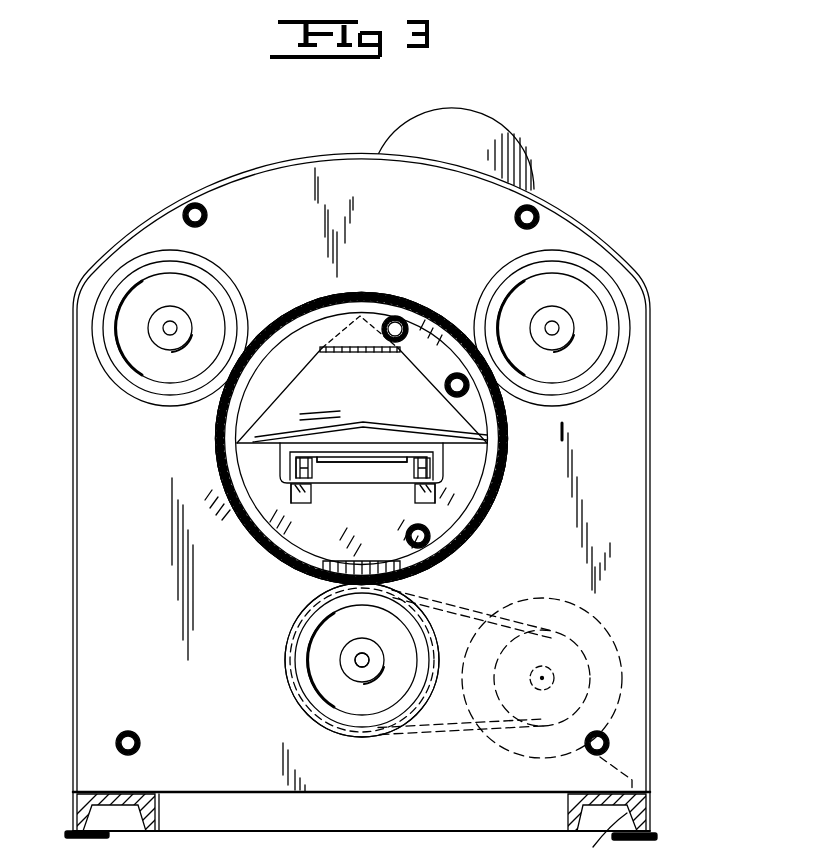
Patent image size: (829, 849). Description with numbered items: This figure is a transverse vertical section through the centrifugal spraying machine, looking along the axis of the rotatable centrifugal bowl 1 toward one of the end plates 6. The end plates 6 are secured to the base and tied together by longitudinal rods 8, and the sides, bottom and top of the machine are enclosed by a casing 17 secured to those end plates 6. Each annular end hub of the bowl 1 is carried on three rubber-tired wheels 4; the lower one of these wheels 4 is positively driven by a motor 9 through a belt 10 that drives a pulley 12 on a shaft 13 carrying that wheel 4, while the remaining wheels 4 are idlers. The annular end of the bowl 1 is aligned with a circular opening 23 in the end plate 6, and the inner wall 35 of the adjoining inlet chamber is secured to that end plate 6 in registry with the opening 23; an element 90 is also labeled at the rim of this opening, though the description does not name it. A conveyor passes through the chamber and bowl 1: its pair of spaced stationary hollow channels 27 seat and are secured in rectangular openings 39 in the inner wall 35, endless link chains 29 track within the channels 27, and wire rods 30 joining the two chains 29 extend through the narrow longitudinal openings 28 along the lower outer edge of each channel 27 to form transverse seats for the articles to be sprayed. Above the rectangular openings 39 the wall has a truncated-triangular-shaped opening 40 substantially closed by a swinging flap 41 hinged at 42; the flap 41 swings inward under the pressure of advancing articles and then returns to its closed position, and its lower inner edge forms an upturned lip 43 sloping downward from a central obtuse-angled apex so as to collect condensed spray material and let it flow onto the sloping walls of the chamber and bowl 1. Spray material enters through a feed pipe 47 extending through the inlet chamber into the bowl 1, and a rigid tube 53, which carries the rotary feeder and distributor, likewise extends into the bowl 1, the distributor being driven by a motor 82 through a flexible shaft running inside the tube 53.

The centrifugal bowl 1 is at (495, 498).
The rubber-tired wheels 4 is at (622, 289).
The end plates 6 is at (630, 462).
The longitudinal rods 8 is at (208, 214).
The motor 9 is at (620, 658).
The belt 10 is at (480, 604).
The pulley 12 is at (290, 628).
The shaft 13 is at (362, 660).
The casing 17 is at (597, 237).
The circular openings 23 is at (512, 457).
The hollow channels 27 is at (412, 485).
The longitudinal openings 28 is at (292, 486).
The endless link chains 29 is at (345, 458).
The wire rods 30 is at (363, 442).
The inner wall 35 is at (307, 545).
The rectangular openings 39 is at (290, 462).
The truncated-triangular-shaped opening 40 is at (403, 437).
The swinging flap 41 is at (402, 378).
The hinge 42 is at (338, 354).
The lip 43 is at (318, 415).
The feed pipe 47 is at (472, 542).
The rigid tube 53 is at (405, 322).
The motor 82 is at (505, 132).
The window glass 90 is at (490, 415).